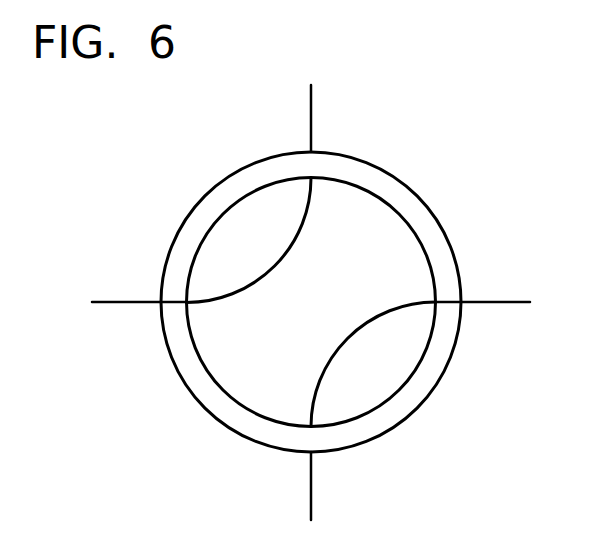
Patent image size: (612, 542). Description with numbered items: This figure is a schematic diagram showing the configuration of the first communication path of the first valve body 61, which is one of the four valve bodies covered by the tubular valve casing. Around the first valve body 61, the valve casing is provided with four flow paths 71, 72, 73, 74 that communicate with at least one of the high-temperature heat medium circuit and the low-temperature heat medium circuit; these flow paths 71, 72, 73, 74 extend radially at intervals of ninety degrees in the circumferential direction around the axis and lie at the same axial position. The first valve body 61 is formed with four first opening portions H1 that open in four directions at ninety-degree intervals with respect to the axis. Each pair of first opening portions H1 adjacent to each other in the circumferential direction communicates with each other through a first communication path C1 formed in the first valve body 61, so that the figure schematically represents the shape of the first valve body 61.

The first valve body 61 is at (385, 240).
The flow path 71 is at (313, 105).
The flow path 72 is at (313, 507).
The flow path 73 is at (515, 305).
The flow path 74 is at (104, 305).
The first opening portion H1 is at (311, 178).
The first communication path C1 is at (283, 248).